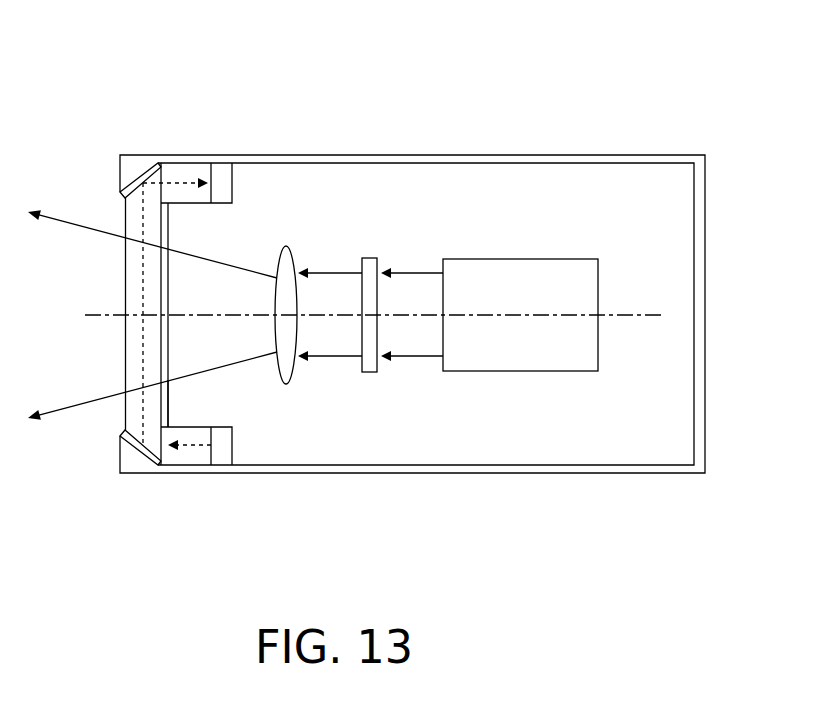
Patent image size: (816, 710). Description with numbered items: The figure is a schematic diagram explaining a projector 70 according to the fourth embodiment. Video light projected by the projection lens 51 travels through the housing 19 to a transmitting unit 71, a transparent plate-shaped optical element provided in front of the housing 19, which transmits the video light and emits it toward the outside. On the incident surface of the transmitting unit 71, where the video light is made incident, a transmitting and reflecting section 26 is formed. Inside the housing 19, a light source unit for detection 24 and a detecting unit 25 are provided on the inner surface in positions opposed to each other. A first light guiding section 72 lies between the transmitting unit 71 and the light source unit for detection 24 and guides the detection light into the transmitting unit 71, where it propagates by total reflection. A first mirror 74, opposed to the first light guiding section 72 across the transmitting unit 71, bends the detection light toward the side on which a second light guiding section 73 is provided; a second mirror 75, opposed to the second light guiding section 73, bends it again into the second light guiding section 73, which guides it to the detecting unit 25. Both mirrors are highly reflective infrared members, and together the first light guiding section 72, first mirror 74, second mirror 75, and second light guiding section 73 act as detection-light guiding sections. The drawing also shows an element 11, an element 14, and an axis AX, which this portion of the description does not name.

The projector 70 is at (162, 79).
The housing 19 is at (655, 470).
The second mirror 75 is at (134, 181).
The first mirror 74 is at (137, 455).
The transmitting unit 71 is at (126, 357).
The second light guiding section 73 is at (190, 163).
The detecting unit 25 is at (228, 181).
The first light guiding section 72 is at (187, 458).
The light source unit for detection 24 is at (222, 458).
The transmitting and reflecting section 26 is at (168, 407).
The projection lens 51 is at (291, 258).
The optical element 14 is at (374, 258).
The light source 11 is at (583, 259).
The optical axis AX is at (642, 314).